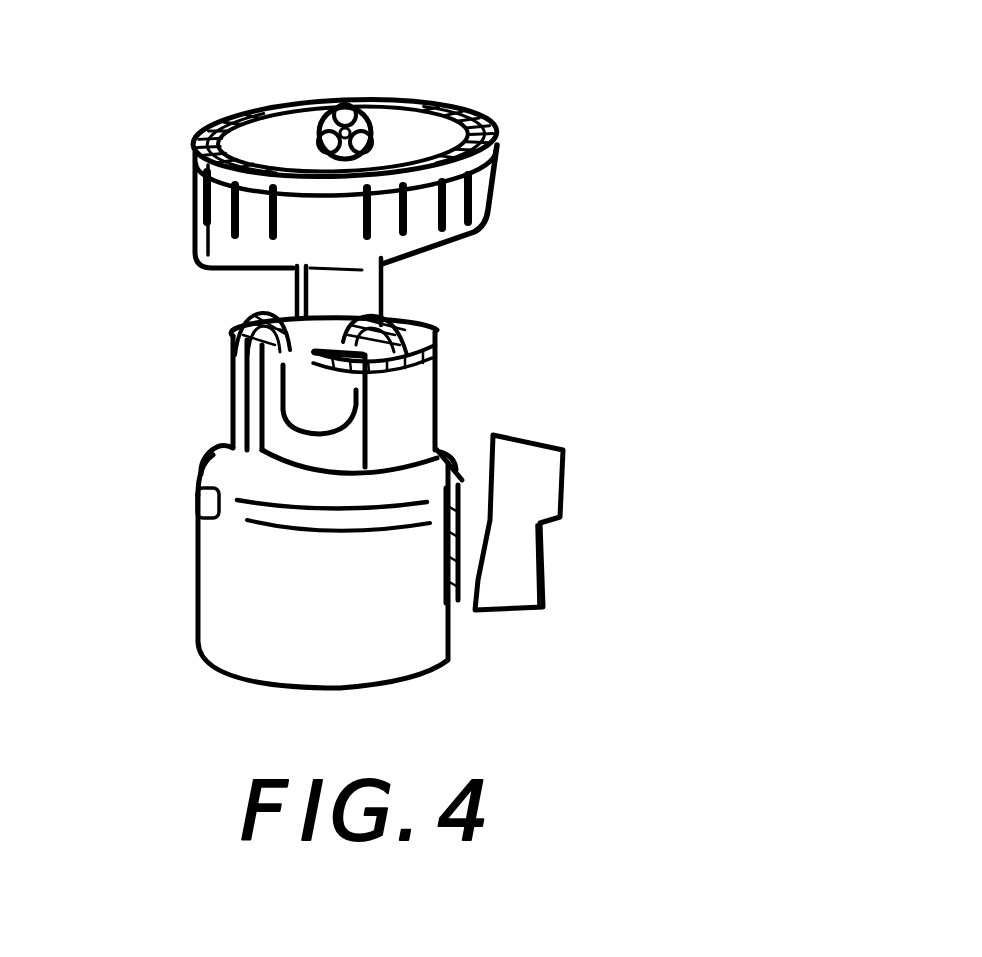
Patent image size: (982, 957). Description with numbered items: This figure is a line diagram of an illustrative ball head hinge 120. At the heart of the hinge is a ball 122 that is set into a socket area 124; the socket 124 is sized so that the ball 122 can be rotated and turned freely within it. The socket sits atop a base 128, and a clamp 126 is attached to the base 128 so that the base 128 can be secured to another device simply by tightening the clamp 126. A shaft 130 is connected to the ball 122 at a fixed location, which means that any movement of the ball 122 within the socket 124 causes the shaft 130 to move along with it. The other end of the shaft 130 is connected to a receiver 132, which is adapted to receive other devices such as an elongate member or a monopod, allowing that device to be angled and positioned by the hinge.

The ball head hinge 120 is at (754, 212).
The ball 122 is at (354, 394).
The socket area 124 is at (405, 318).
The clamp 126 is at (550, 583).
The base 128 is at (449, 658).
The shaft 130 is at (323, 308).
The receiver 132 is at (475, 140).